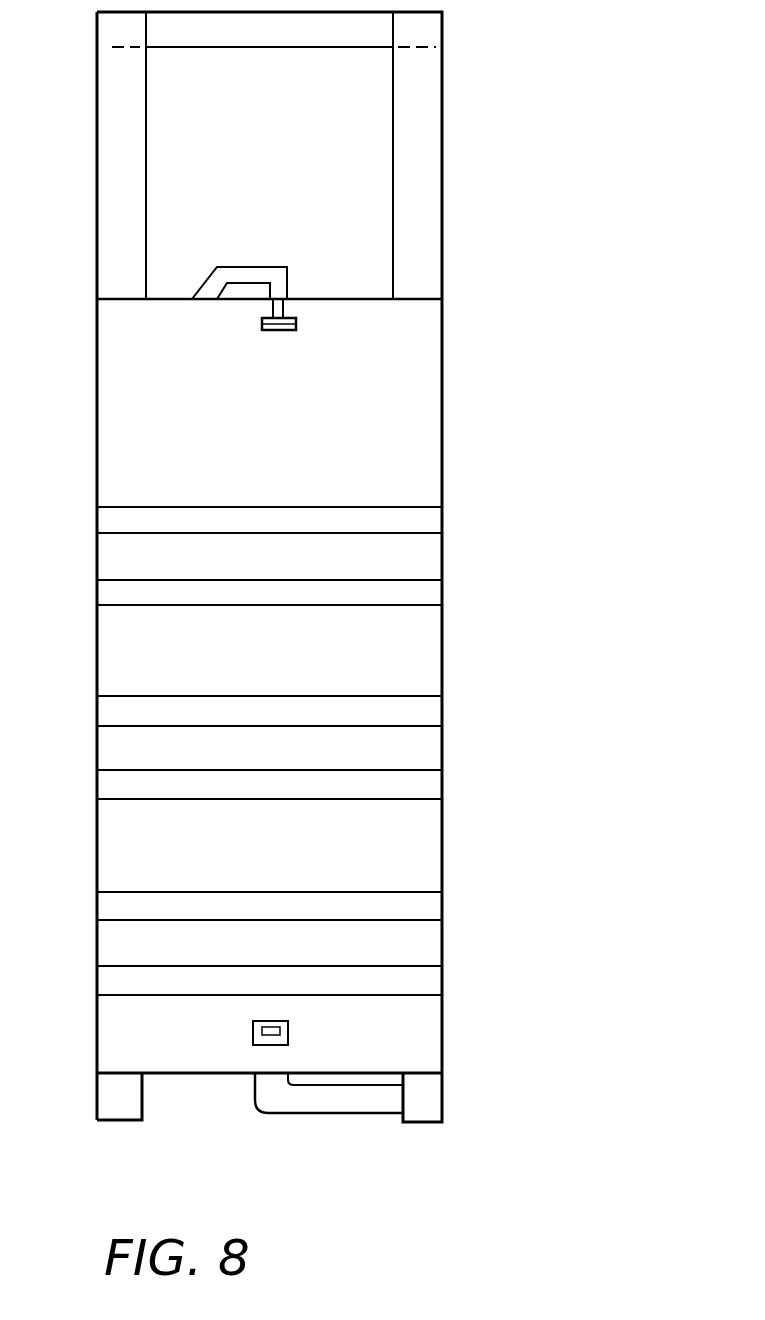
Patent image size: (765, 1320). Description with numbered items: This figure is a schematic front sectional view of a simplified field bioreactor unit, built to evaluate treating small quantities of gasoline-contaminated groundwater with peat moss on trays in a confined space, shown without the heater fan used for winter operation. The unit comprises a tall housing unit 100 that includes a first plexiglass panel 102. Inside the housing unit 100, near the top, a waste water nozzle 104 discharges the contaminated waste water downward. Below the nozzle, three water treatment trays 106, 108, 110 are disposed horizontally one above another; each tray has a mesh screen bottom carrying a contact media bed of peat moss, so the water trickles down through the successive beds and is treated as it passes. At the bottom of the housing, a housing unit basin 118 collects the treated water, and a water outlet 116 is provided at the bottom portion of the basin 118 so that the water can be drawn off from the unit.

The housing unit 100 is at (442, 162).
The first plexiglass panel 102 is at (423, 447).
The waste water nozzle 104 is at (275, 330).
The water treatment tray 106 is at (430, 562).
The water treatment tray 108 is at (432, 750).
The water treatment tray 110 is at (428, 946).
The water outlet 116 is at (291, 1113).
The housing unit basin 118 is at (428, 1040).